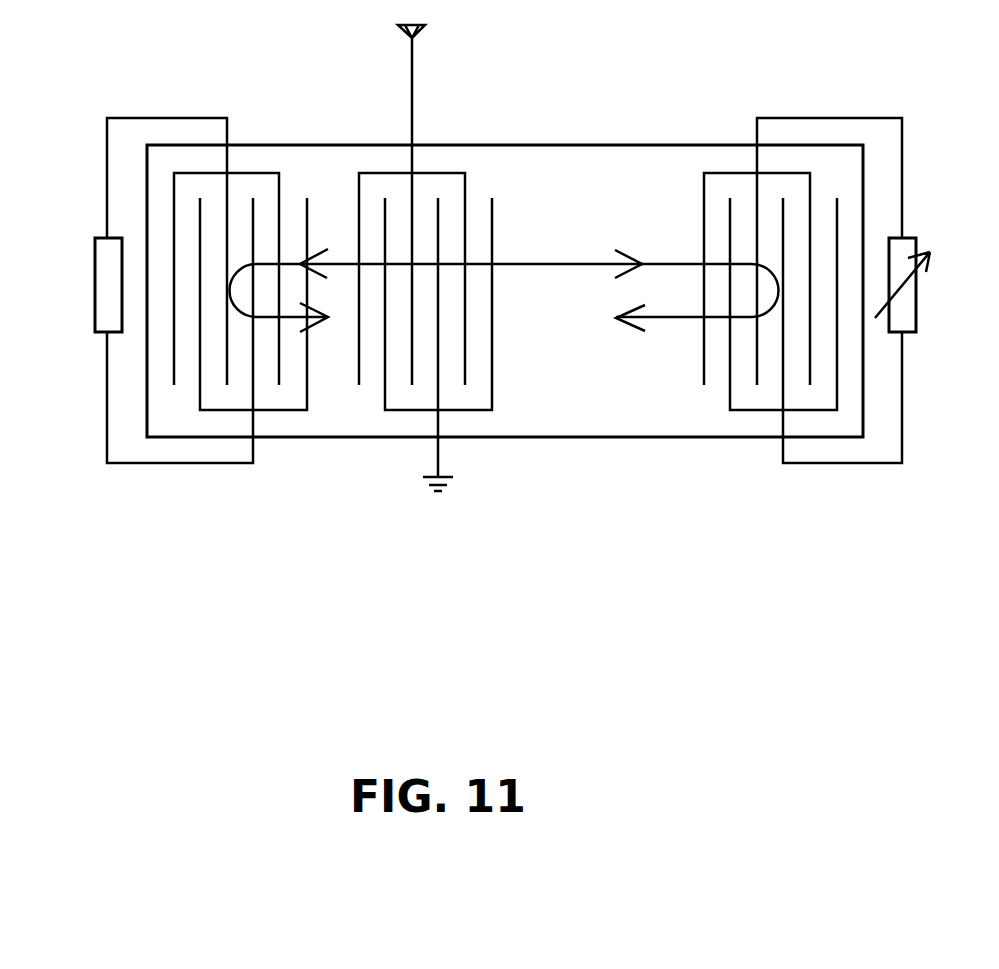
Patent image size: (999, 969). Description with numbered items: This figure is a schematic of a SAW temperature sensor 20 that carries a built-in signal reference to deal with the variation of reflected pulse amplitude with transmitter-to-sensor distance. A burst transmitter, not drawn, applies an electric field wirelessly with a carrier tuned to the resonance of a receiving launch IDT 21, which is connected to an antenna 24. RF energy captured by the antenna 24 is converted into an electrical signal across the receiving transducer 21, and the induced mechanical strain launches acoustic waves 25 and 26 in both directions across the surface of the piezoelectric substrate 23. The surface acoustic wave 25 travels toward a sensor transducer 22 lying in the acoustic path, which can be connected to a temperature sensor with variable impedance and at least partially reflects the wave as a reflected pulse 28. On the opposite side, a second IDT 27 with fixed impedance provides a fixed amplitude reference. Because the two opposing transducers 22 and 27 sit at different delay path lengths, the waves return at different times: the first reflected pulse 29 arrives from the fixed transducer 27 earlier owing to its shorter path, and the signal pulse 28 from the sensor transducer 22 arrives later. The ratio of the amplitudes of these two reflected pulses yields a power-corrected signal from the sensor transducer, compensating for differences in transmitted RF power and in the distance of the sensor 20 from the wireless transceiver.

The temperature sensor 20 is at (202, 56).
The receiving launch IDT 21 is at (480, 167).
The sensor transducer 22 is at (708, 158).
The piezoelectric substrate 23 is at (588, 372).
The antenna 24 is at (413, 78).
The surface acoustic wave 25 is at (615, 250).
The acoustic wave 26 is at (328, 249).
The second IDT 27 is at (295, 167).
The reflected signal pulse 28 is at (640, 328).
The first reflected pulse 29 is at (328, 320).